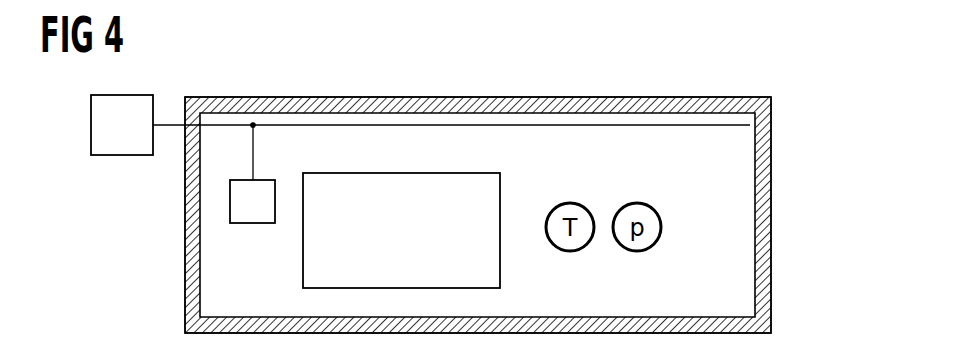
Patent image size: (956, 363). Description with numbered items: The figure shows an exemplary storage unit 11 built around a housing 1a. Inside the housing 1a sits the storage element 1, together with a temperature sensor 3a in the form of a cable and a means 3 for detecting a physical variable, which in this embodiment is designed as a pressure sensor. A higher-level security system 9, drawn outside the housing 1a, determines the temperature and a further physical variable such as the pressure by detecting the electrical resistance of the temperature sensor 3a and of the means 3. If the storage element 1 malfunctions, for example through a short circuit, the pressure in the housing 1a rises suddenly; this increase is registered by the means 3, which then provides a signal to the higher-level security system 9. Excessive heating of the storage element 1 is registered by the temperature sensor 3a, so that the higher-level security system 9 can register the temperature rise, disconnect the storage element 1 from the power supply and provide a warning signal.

The storage unit 11 is at (582, 93).
The housing 1a is at (771, 247).
The temperature sensor 3a is at (603, 127).
The higher-level security system 9 is at (124, 155).
The means for detecting the physical variable 3 is at (254, 223).
The storage element 1 is at (500, 268).